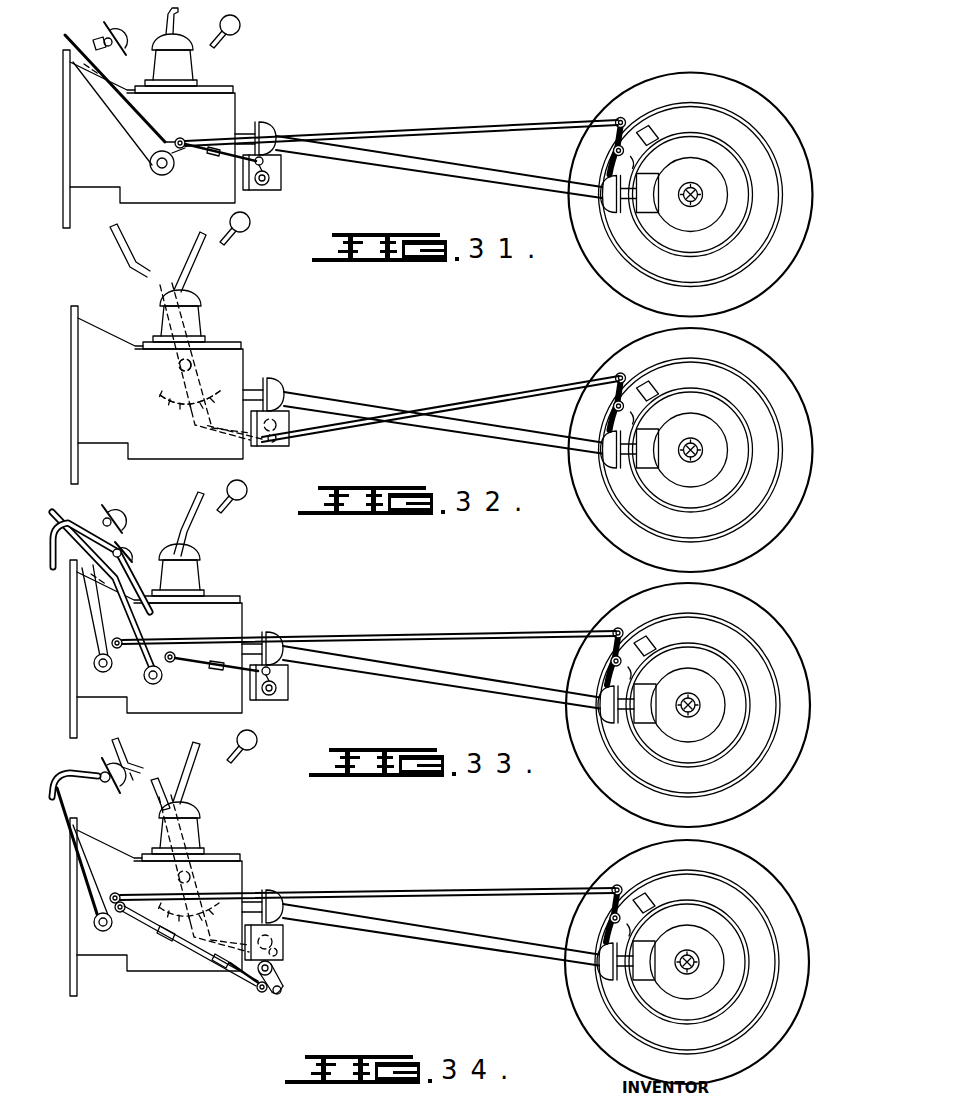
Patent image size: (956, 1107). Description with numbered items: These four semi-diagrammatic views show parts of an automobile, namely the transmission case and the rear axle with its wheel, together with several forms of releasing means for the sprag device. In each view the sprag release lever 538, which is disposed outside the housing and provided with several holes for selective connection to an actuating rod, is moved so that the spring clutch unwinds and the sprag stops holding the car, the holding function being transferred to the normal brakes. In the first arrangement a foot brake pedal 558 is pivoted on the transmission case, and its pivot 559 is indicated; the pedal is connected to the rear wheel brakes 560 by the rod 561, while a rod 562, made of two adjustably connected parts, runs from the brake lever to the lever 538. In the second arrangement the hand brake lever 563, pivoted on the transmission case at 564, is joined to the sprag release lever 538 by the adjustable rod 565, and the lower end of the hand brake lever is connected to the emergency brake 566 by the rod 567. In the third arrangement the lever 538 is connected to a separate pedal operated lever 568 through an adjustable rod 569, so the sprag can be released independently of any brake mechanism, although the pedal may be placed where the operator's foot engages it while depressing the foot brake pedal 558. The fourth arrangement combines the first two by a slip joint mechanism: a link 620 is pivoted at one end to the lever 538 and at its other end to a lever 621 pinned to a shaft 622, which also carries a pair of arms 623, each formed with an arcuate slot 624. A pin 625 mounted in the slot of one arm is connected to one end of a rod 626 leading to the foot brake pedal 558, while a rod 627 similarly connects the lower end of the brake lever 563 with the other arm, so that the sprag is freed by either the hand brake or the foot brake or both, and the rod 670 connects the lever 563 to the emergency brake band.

In FIG. 31, the lever 538 is at (282, 170).
In FIG. 32, the lever 538 is at (290, 440).
In FIG. 33, the lever 538 is at (290, 680).
In FIG. 34, the lever 538 is at (285, 925).
In FIG. 31, the foot brake pedal 558 is at (130, 133).
In FIG. 33, the foot brake pedal 558 is at (95, 642).
In FIG. 34, the foot brake pedal 558 is at (85, 838).
In FIG. 31, the pivot 559 is at (160, 170).
In FIG. 31, the rear wheel brakes 560 is at (652, 126).
In FIG. 33, the rear wheel brakes 560 is at (642, 645).
In FIG. 34, the rear wheel brakes 560 is at (643, 910).
In FIG. 31, the rod 561 is at (430, 128).
In FIG. 31, the rod 562 is at (220, 155).
In FIG. 32, the hand brake lever 563 is at (123, 270).
In FIG. 34, the hand brake lever 563 is at (132, 750).
In FIG. 32, the pivot 564 is at (217, 340).
In FIG. 32, the adjustable rod 565 is at (230, 443).
In FIG. 32, the emergency brake 566 is at (645, 388).
In FIG. 32, the rod 567 is at (418, 398).
In FIG. 33, the pedal operated lever 568 is at (133, 637).
In FIG. 33, the adjustable rod 569 is at (190, 667).
In FIG. 34, the link 620 is at (295, 912).
In FIG. 34, the lever 621 is at (290, 948).
In FIG. 34, the shaft 622 is at (290, 935).
In FIG. 34, the arms 623 is at (285, 976).
In FIG. 34, the arcuate slot 624 is at (281, 993).
In FIG. 34, the pin 625 is at (258, 998).
In FIG. 34, the rod 626 is at (193, 953).
In FIG. 34, the rod 627 is at (241, 975).
In FIG. 34, the rod 670 is at (408, 913).